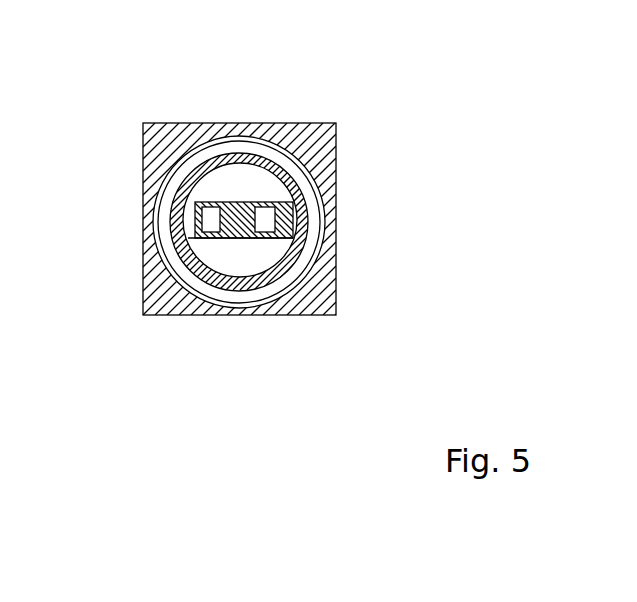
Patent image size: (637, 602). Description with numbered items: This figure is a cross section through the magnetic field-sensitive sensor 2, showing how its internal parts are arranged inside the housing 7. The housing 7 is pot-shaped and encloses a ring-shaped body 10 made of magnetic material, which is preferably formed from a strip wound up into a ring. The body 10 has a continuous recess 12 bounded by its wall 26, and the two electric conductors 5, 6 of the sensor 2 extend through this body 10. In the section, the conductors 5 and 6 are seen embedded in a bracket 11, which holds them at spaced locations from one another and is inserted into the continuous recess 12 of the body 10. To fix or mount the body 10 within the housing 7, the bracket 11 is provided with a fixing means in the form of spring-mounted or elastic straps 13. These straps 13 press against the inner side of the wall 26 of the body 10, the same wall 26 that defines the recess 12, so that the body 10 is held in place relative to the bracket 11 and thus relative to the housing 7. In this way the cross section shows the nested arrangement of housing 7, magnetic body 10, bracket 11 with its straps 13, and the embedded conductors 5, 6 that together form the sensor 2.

The magnetic field-sensitive sensor 2 is at (165, 85).
The electric conductor 5 is at (270, 208).
The electric conductor 6 is at (190, 217).
The housing 7 is at (183, 234).
The ring-shaped body 10 is at (305, 238).
The bracket 11 is at (202, 267).
The continuous recess 12 is at (260, 192).
The elastic straps 13 is at (145, 127).
The wall 26 is at (238, 290).